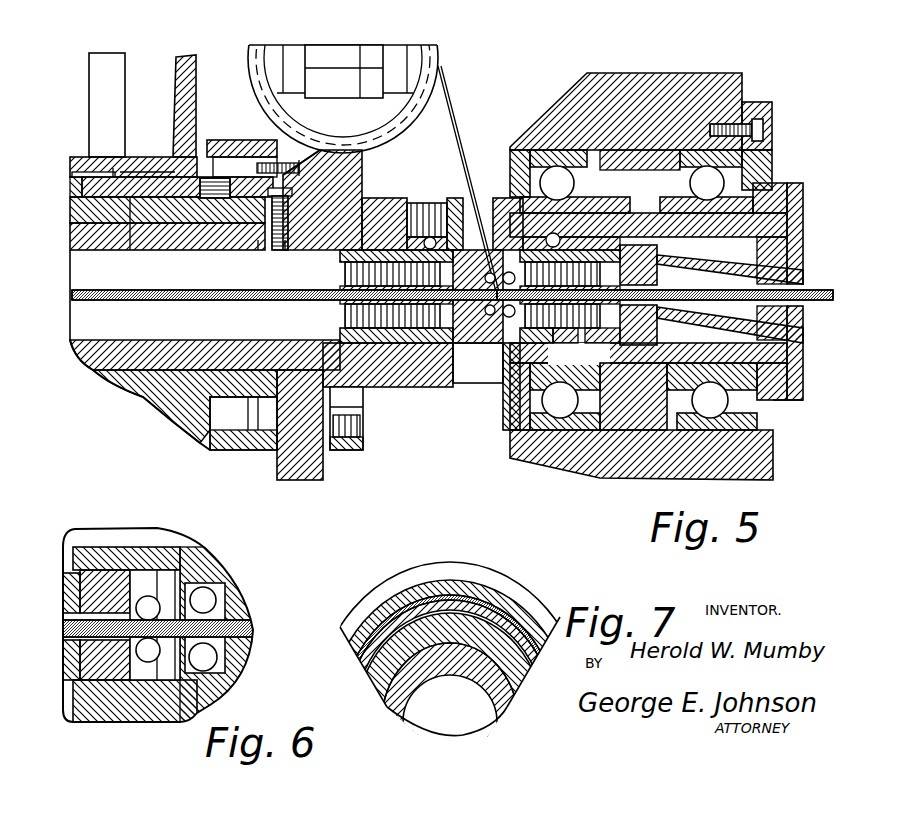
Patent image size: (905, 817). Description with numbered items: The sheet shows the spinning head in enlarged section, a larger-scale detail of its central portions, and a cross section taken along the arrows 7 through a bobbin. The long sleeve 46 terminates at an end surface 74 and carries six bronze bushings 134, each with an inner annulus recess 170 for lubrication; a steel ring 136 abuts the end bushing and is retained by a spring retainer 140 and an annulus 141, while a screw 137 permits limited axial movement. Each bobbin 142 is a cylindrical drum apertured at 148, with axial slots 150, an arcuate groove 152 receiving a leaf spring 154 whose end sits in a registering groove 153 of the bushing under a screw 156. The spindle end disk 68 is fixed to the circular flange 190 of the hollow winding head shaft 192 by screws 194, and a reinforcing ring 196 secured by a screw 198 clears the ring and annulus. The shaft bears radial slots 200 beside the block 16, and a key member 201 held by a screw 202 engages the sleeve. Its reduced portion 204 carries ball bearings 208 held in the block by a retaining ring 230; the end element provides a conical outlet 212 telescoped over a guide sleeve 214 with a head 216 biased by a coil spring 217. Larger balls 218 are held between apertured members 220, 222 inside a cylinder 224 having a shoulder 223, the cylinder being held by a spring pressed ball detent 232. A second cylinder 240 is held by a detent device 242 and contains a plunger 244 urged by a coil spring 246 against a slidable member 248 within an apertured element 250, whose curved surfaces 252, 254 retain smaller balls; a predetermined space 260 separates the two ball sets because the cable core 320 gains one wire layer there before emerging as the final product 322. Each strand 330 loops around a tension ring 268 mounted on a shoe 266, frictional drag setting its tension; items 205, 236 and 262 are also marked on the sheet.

In FIG. 5, the section arrows 7 is at (122, 127).
In FIG. 5, the block 16 is at (641, 88).
In FIG. 5, the sleeve 46 is at (186, 212).
In FIG. 7, the sleeve 46 is at (385, 690).
In FIG. 5, the end disk 68 is at (314, 471).
In FIG. 5, the end surface 74 is at (332, 407).
In FIG. 5, the bronze bushing 134 is at (81, 181).
In FIG. 7, the bronze bushing 134 is at (360, 660).
In FIG. 5, the steel ring 136 is at (223, 188).
In FIG. 5, the screw 137 is at (210, 182).
In FIG. 5, the spring retainer 140 is at (255, 400).
In FIG. 5, the annulus 141 is at (252, 178).
In FIG. 5, the bobbin 142 is at (194, 108).
In FIG. 7, the bobbin 142 is at (477, 574).
In FIG. 5, the aperture 148 is at (85, 158).
In FIG. 7, the aperture 148 is at (450, 596).
In FIG. 5, the slot 150 is at (128, 173).
In FIG. 7, the slot 150 is at (490, 607).
In FIG. 5, the arcuate groove 152 is at (80, 173).
In FIG. 7, the arcuate groove 152 is at (424, 602).
In FIG. 7, the registering groove 153 is at (400, 627).
In FIG. 5, the leaf spring 154 is at (113, 176).
In FIG. 7, the leaf spring 154 is at (517, 620).
In FIG. 7, the screw 156 is at (527, 627).
In FIG. 5, the inner annulus recess 170 is at (130, 196).
In FIG. 7, the inner annulus recess 170 is at (370, 680).
In FIG. 5, the circular flange 190 is at (363, 447).
In FIG. 5, the hollow winding head shaft 192 is at (427, 378).
In FIG. 7, the hollow winding head shaft 192 is at (403, 700).
In FIG. 5, the screw 194 is at (363, 427).
In FIG. 5, the reinforcing ring 196 is at (205, 445).
In FIG. 5, the screw 198 is at (321, 164).
In FIG. 5, the radial slot 200 is at (508, 388).
In FIG. 6, the radial slot 200 is at (128, 545).
In FIG. 5, the key member 201 is at (285, 251).
In FIG. 5, the screw 202 is at (257, 251).
In FIG. 5, the reduced diameter portion 204 is at (745, 195).
In FIG. 5, the layer 205 is at (207, 232).
In FIG. 5, the ball bearings 208 is at (548, 150).
In FIG. 5, the conical outlet 212 is at (788, 326).
In FIG. 5, the guide sleeve 214 is at (646, 265).
In FIG. 5, the head 216 is at (560, 333).
In FIG. 6, the head 216 is at (220, 655).
In FIG. 5, the coil spring 217 is at (597, 333).
In FIG. 6, the ball bearings 218 is at (228, 592).
In FIG. 5, the apertured member 220 is at (497, 250).
In FIG. 6, the apertured member 220 is at (222, 597).
In FIG. 6, the apertured member 222 is at (249, 601).
In FIG. 5, the shoulder 223 is at (505, 335).
In FIG. 6, the shoulder 223 is at (175, 613).
In FIG. 5, the cylinder 224 is at (495, 385).
In FIG. 6, the cylinder 224 is at (182, 613).
In FIG. 5, the retaining ring 230 is at (764, 102).
In FIG. 5, the spring pressed ball detent 232 is at (578, 186).
In FIG. 6, the block 236 is at (134, 664).
In FIG. 5, the second cylinder 240 is at (344, 254).
In FIG. 5, the detent device 242 is at (421, 200).
In FIG. 5, the plunger 244 is at (345, 323).
In FIG. 6, the plunger 244 is at (70, 684).
In FIG. 5, the coil spring 246 is at (345, 282).
In FIG. 5, the slidable member 248 is at (438, 241).
In FIG. 6, the slidable member 248 is at (90, 547).
In FIG. 6, the apertured element 250 is at (145, 597).
In FIG. 6, the curved surface 252 is at (157, 613).
In FIG. 6, the curved surface 254 is at (137, 698).
In FIG. 5, the predetermined space 260 is at (322, 149).
In FIG. 6, the predetermined space 260 is at (173, 637).
In FIG. 5, the wheel hub 262 is at (300, 60).
In FIG. 5, the shoe 266 is at (383, 112).
In FIG. 5, the tension ring 268 is at (440, 56).
In FIG. 5, the cable core 320 is at (198, 301).
In FIG. 6, the cable core 320 is at (134, 604).
In FIG. 5, the final product 322 is at (786, 290).
In FIG. 6, the final product 322 is at (245, 630).
In FIG. 5, the strand 330 is at (442, 70).